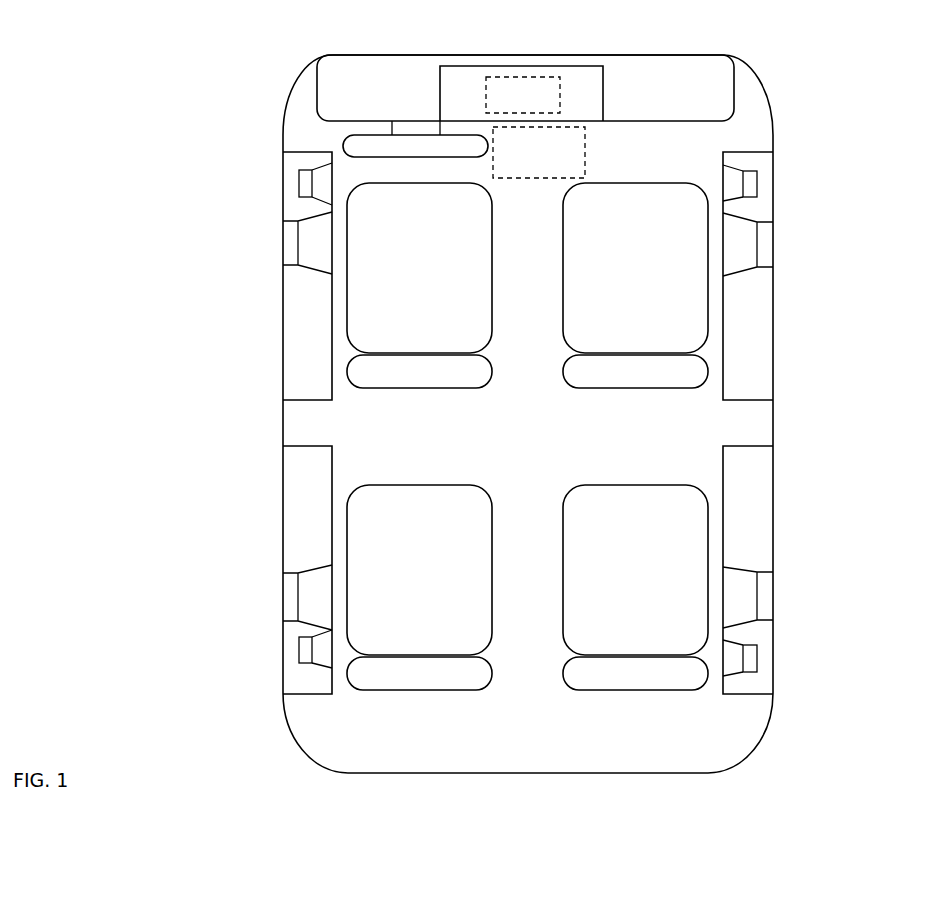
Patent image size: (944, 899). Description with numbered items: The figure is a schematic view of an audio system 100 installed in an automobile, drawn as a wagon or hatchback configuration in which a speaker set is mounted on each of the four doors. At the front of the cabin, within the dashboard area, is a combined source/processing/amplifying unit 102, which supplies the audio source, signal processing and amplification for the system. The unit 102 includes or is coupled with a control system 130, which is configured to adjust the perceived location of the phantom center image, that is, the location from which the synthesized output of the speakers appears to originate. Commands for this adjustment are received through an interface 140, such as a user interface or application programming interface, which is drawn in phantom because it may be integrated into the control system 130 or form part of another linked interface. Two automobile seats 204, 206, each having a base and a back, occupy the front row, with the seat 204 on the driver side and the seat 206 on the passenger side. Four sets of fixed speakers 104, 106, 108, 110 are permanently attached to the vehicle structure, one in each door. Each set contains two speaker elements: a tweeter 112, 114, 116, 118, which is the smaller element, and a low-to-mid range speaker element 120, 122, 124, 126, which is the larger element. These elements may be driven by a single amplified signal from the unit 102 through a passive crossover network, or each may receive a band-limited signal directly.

The audio system 100 is at (126, 135).
The source/processing/amplifying unit 102 is at (594, 97).
The fixed speaker set 104 is at (252, 152).
The fixed speaker set 106 is at (798, 153).
The fixed speaker set 108 is at (252, 572).
The fixed speaker set 110 is at (803, 565).
The tweeter 112 is at (334, 177).
The tweeter 114 is at (730, 180).
The tweeter 116 is at (323, 667).
The tweeter 118 is at (735, 680).
The low-to-mid range speaker element 120 is at (313, 268).
The low-to-mid range speaker element 122 is at (741, 270).
The low-to-mid range speaker element 124 is at (313, 570).
The low-to-mid range speaker element 126 is at (742, 572).
The control system 130 is at (555, 108).
The interface 140 is at (523, 201).
The automobile seat 204 is at (469, 220).
The automobile seat 206 is at (610, 220).